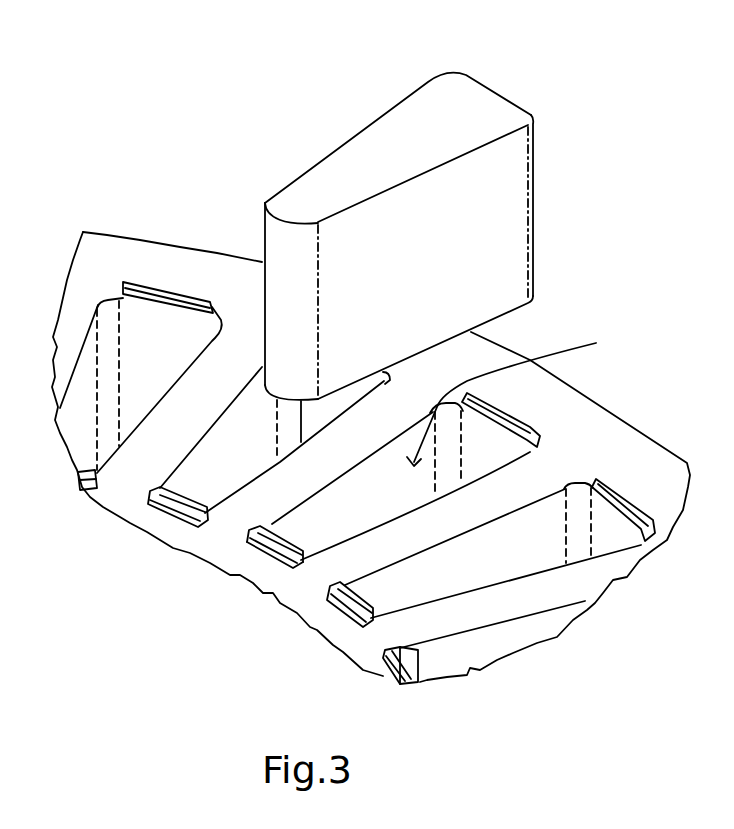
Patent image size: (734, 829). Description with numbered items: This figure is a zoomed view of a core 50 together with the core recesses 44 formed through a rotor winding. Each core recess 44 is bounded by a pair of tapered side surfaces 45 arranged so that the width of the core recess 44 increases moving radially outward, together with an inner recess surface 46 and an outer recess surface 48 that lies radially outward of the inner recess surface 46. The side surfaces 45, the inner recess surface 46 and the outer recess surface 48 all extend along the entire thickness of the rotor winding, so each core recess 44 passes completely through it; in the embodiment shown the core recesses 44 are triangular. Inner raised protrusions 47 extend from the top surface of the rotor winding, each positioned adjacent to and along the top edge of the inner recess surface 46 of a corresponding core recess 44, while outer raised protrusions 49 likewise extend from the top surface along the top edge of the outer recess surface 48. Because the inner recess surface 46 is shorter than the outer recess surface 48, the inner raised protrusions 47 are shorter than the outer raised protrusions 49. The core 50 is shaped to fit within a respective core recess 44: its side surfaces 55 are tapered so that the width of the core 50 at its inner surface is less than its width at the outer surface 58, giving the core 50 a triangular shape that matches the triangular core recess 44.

The core recess 44 is at (518, 396).
The side surface 45 is at (350, 488).
The inner recess surface 46 is at (272, 526).
The inner raised protrusion 47 is at (257, 545).
The outer recess surface 48 is at (493, 455).
The outer raised protrusion 49 is at (514, 413).
The core 50 is at (449, 108).
The tapered side surface 55 is at (475, 251).
The outer surface 58 is at (537, 183).